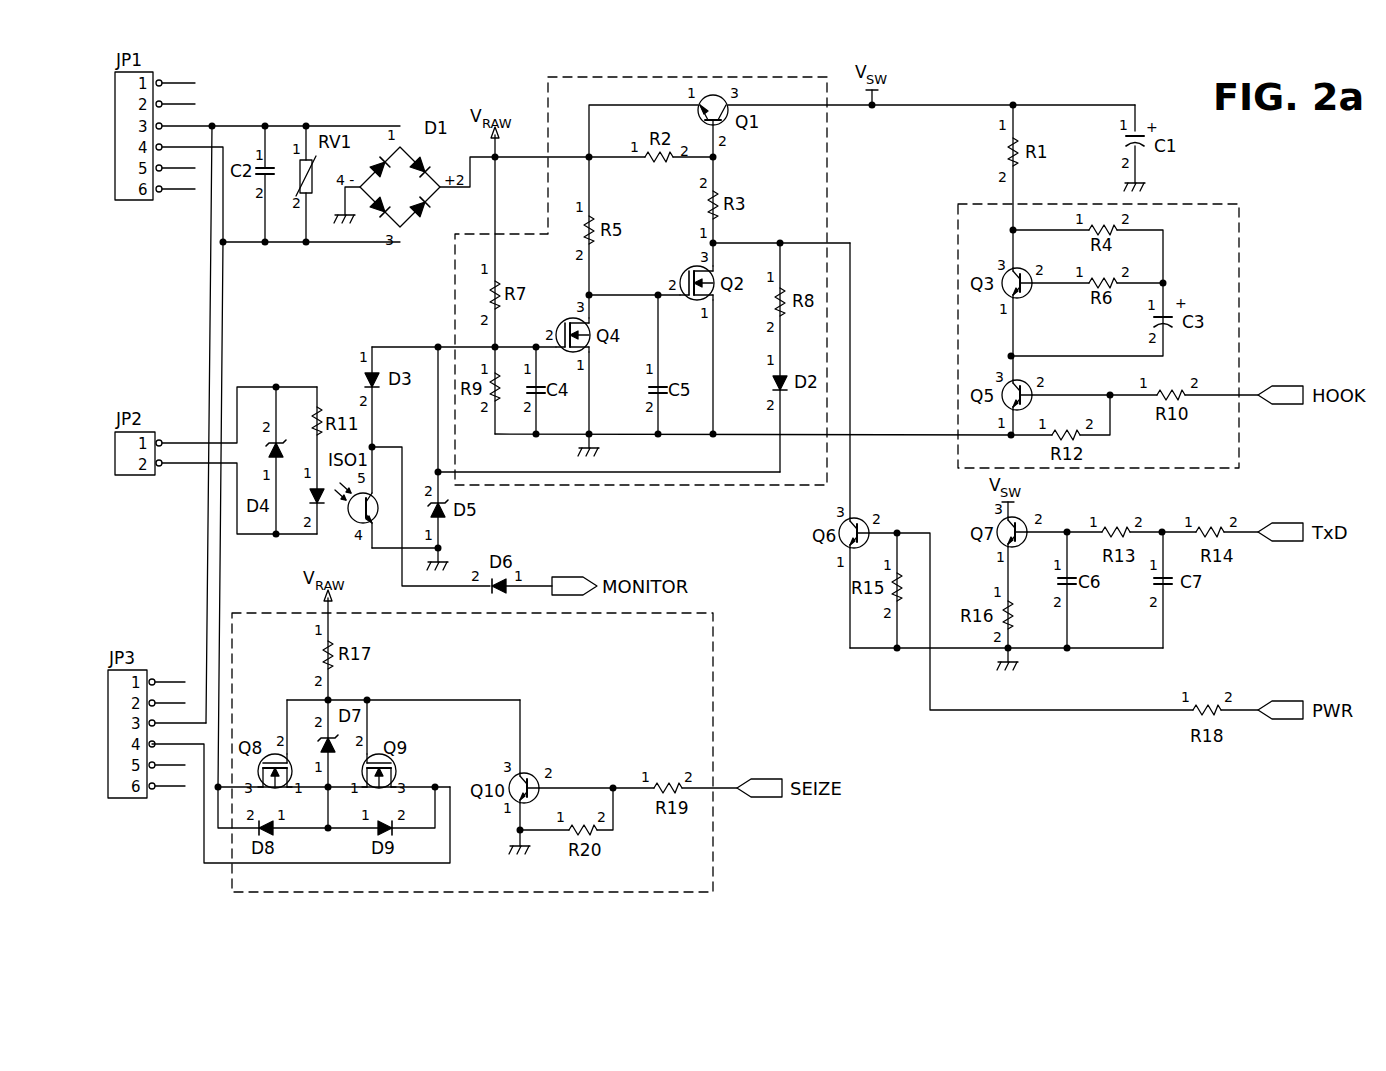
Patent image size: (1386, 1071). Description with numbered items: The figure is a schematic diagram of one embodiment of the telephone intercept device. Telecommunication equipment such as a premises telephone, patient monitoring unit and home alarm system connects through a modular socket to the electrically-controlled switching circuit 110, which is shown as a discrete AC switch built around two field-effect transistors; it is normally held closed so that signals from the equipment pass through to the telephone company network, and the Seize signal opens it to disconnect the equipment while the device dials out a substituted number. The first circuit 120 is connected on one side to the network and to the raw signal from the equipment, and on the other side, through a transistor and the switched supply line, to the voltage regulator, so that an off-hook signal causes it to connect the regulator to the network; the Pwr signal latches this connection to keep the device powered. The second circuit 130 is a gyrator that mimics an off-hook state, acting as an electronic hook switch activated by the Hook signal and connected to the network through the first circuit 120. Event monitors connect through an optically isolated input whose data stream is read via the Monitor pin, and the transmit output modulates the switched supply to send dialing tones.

The electrically-controlled switching circuit 110 is at (715, 666).
The first circuit 120 is at (828, 157).
The second circuit 130 is at (1242, 272).